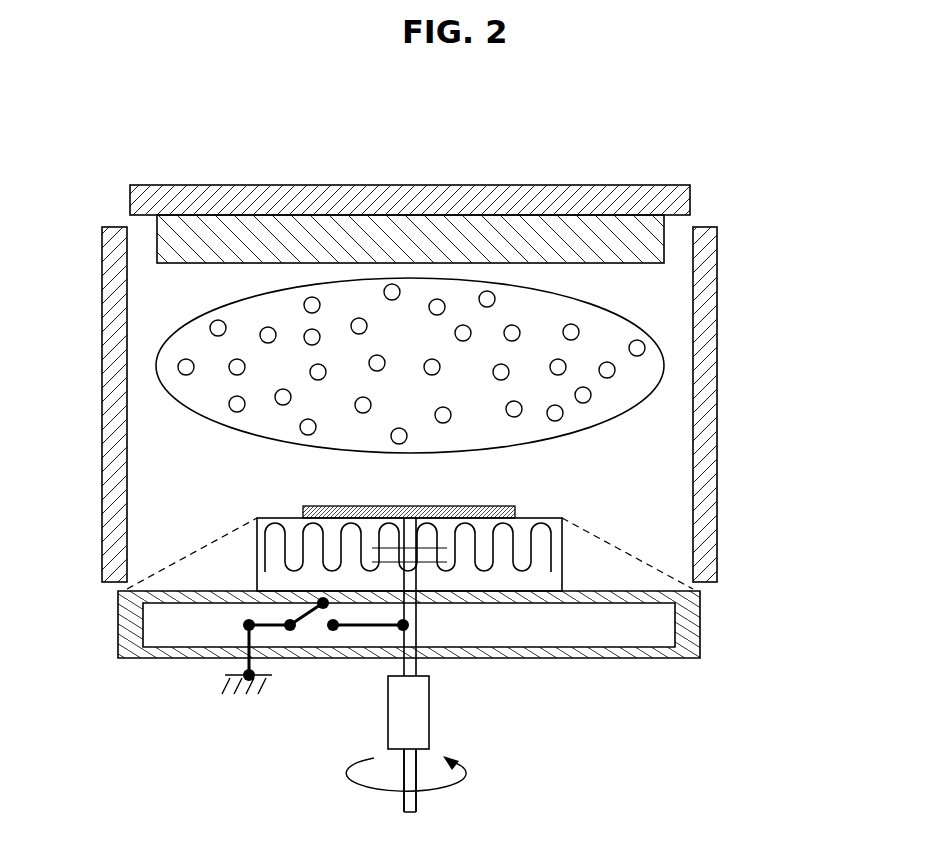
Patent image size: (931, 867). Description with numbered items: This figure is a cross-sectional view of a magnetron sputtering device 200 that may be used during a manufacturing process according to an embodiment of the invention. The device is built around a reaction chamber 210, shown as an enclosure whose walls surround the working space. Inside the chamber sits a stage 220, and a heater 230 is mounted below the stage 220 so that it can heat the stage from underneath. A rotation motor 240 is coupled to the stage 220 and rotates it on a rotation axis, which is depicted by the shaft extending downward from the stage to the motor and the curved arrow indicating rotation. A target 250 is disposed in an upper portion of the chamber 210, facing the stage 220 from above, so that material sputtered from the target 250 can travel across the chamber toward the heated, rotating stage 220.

The magnetron sputtering device 200 is at (437, 120).
The reaction chamber 210 is at (710, 305).
The stage 220 is at (502, 512).
The heater 230 is at (557, 543).
The rotation motor 240 is at (424, 712).
The target 250 is at (650, 242).